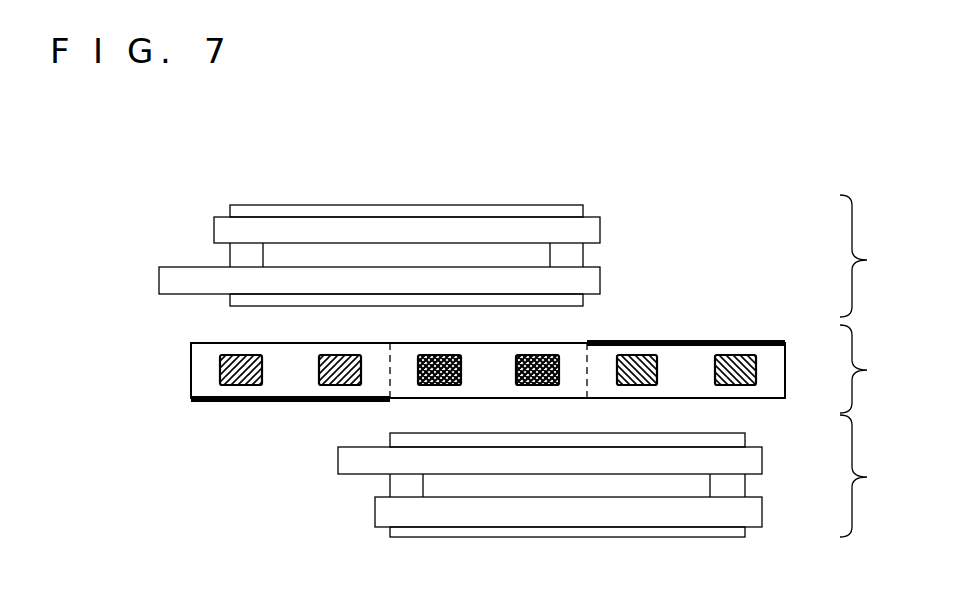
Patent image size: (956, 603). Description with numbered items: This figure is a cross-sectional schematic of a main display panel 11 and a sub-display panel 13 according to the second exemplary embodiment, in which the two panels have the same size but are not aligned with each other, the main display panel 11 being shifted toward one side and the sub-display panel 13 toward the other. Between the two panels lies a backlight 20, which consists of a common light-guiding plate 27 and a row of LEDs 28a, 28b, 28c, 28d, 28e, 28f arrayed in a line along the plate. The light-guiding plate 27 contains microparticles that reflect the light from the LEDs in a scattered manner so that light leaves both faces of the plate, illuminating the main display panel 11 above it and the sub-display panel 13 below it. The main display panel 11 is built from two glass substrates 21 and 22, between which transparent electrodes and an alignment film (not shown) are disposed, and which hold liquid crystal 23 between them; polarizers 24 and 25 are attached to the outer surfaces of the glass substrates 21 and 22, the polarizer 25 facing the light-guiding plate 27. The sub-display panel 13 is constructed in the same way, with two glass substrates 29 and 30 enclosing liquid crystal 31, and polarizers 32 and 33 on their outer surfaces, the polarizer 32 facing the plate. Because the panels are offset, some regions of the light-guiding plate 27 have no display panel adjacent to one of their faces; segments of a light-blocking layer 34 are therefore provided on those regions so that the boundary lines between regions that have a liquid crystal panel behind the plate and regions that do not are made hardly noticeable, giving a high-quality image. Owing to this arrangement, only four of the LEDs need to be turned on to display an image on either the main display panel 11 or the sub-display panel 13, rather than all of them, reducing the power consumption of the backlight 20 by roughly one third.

The main display panel 11 is at (870, 256).
The sub-display panel 13 is at (870, 476).
The backlight 20 is at (870, 369).
The glass substrate 21 is at (222, 231).
The glass substrate 22 is at (163, 275).
The liquid crystal 23 is at (382, 258).
The polarizer 24 is at (277, 210).
The polarizer 25 is at (232, 300).
The light-guiding plate 27 is at (772, 370).
The LED 28a is at (251, 355).
The LED 28b is at (335, 355).
The LED 28c is at (443, 355).
The LED 28d is at (526, 355).
The LED 28e is at (635, 355).
The LED 28f is at (723, 355).
The glass substrate 29 is at (343, 460).
The glass substrate 30 is at (380, 517).
The liquid crystal 31 is at (550, 485).
The polarizer 32 is at (392, 438).
The polarizer 33 is at (391, 534).
The light-blocking layer 34 is at (252, 403).